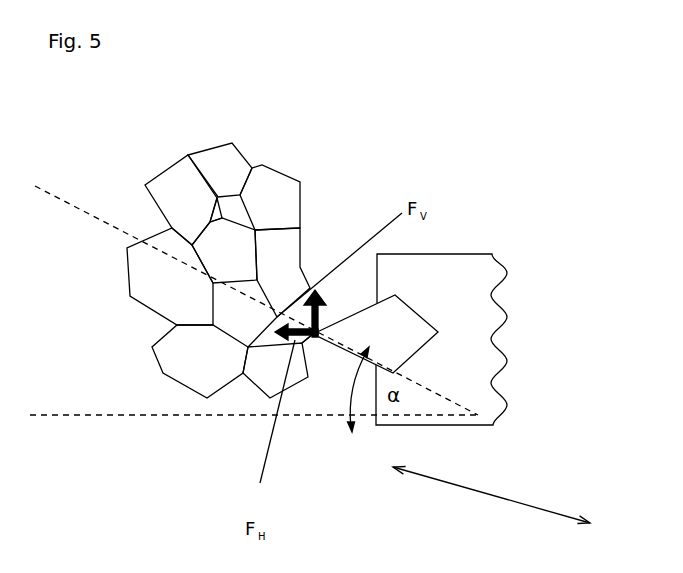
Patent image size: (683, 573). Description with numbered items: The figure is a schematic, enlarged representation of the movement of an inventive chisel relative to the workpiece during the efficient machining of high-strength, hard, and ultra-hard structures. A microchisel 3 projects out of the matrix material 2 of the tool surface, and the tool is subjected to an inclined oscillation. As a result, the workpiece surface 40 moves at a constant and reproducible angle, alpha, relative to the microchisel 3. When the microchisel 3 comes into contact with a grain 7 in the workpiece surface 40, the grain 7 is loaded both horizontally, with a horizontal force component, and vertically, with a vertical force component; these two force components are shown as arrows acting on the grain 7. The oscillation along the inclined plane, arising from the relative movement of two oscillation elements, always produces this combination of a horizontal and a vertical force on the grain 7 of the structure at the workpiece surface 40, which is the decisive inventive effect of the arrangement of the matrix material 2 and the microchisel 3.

The matrix material 2 is at (428, 288).
The microchisel 3 is at (408, 338).
The workpiece surface 40 is at (298, 272).
The grain 7 is at (272, 340).